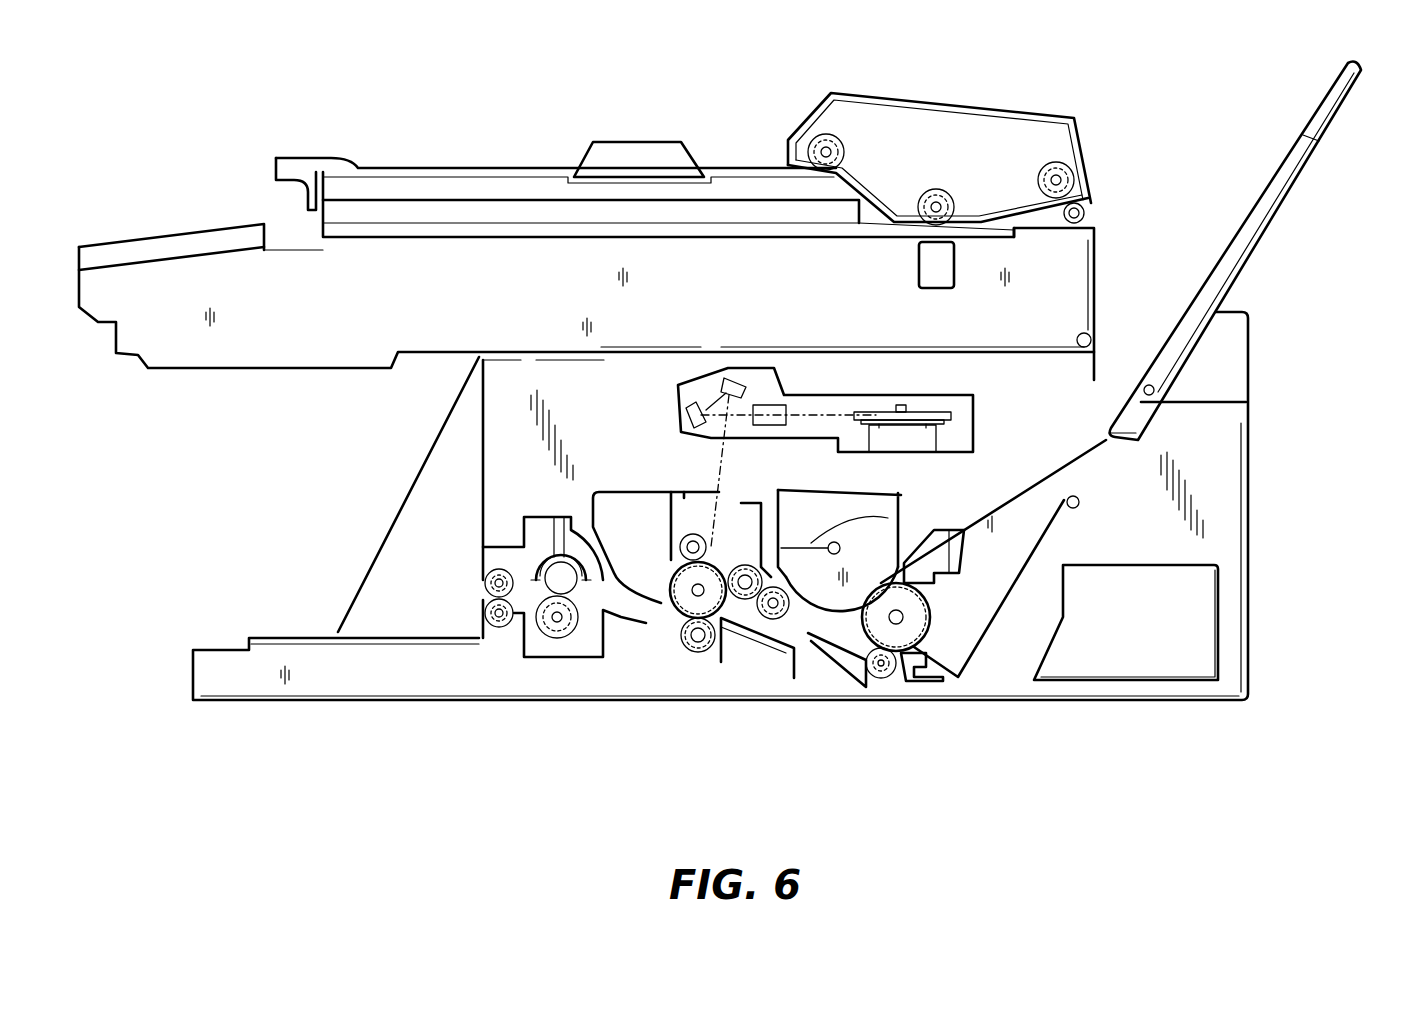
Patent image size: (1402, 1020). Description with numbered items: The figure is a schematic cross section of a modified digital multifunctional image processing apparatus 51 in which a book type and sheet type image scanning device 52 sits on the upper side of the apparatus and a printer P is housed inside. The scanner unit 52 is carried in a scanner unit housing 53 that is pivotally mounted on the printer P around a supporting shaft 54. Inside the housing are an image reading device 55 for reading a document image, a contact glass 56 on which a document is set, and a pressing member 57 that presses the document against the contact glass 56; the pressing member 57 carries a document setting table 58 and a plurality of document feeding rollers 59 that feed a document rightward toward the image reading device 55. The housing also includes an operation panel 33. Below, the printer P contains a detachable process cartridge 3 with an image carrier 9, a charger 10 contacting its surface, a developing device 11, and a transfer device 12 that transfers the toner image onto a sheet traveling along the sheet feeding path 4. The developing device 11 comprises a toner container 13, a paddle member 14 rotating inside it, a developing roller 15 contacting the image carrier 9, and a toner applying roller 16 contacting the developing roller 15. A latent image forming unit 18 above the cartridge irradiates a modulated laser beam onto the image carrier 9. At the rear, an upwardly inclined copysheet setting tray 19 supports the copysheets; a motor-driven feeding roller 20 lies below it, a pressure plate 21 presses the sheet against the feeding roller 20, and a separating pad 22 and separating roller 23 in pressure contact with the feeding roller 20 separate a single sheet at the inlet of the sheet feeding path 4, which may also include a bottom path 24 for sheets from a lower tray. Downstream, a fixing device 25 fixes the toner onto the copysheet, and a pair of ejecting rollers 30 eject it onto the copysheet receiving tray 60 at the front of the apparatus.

The process cartridge 3 is at (590, 476).
The sheet feeding path 4 is at (768, 620).
The image carrier 9 is at (690, 602).
The charger 10 is at (692, 533).
The developing device 11 is at (843, 502).
The transfer device 12 is at (697, 652).
The toner container 13 is at (795, 510).
The paddle member 14 is at (840, 547).
The developing roller 15 is at (737, 600).
The toner applying roller 16 is at (762, 627).
The latent image forming unit 18 is at (757, 368).
The copysheet setting tray 19 is at (1302, 157).
The feeding roller 20 is at (913, 617).
The pressure plate 21 is at (1040, 545).
The separating pad 22 is at (923, 660).
The separating roller 23 is at (880, 678).
The bottom path 24 is at (830, 648).
The fixing device 25 is at (567, 655).
The ejecting rollers 30 is at (500, 627).
The operation panel 33 is at (139, 237).
The digital multifunctional image processing apparatus 51 is at (1248, 415).
The book type and sheet type image scanning device 52 is at (508, 250).
The scanner unit housing 53 is at (1095, 267).
The supporting shaft 54 is at (1092, 341).
The image reading device 55 is at (923, 260).
The contact glass 56 is at (438, 226).
The pressing member 57 is at (372, 166).
The document setting table 58 is at (720, 167).
The document feeding rollers 59 is at (843, 146).
The copysheet receiving tray 60 is at (267, 637).
The printer P is at (631, 423).